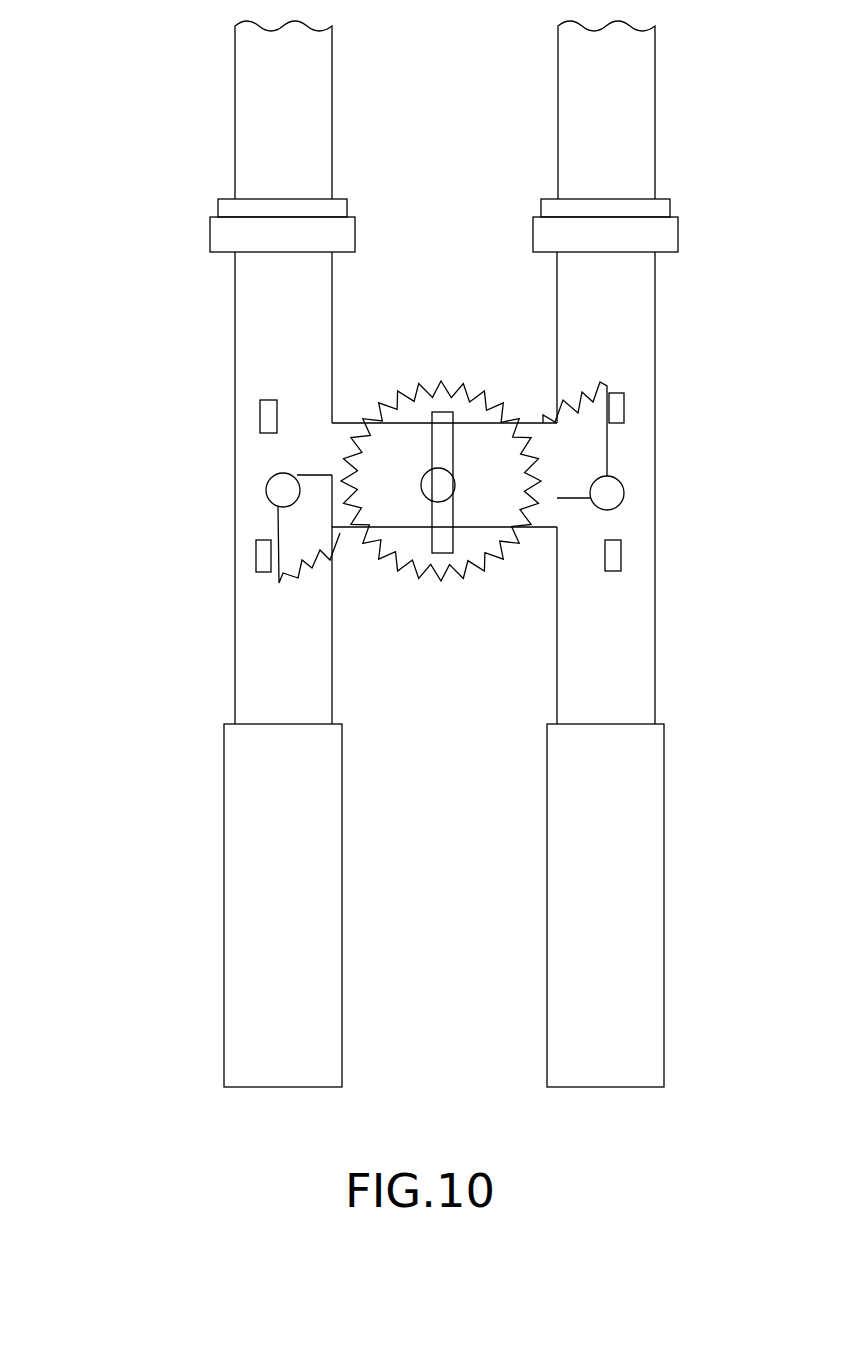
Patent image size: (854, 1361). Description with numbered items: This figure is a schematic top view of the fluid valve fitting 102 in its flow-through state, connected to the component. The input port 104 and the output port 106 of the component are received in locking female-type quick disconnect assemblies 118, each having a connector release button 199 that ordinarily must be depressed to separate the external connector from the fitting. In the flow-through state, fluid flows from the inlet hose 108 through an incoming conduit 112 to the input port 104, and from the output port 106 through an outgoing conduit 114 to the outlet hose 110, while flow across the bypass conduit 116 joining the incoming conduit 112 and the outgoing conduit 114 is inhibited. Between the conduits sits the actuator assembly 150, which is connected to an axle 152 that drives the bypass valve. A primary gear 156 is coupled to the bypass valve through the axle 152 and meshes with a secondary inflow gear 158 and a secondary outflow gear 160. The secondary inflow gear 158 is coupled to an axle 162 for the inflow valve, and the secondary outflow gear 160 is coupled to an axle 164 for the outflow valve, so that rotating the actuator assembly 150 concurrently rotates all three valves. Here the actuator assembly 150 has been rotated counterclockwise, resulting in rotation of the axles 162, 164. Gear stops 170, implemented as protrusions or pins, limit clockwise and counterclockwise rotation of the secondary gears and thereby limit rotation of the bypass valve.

The fluid valve fitting 102 is at (92, 188).
The input port 104 is at (332, 70).
The output port 106 is at (558, 74).
The inlet hose 108 is at (224, 862).
The outlet hose 110 is at (664, 876).
The incoming conduit 112 is at (244, 346).
The outgoing conduit 114 is at (645, 408).
The bypass conduit 116 is at (522, 425).
The quick disconnect assembly 118 is at (347, 210).
The actuator assembly 150 is at (444, 480).
The axle 152 is at (438, 485).
The primary gear 156 is at (398, 400).
The secondary inflow gear 158 is at (254, 519).
The secondary outflow gear 160 is at (625, 412).
The axle 162 is at (276, 490).
The axle 164 is at (612, 493).
The gear stop 170 is at (260, 416).
The connector release button 199 is at (340, 235).